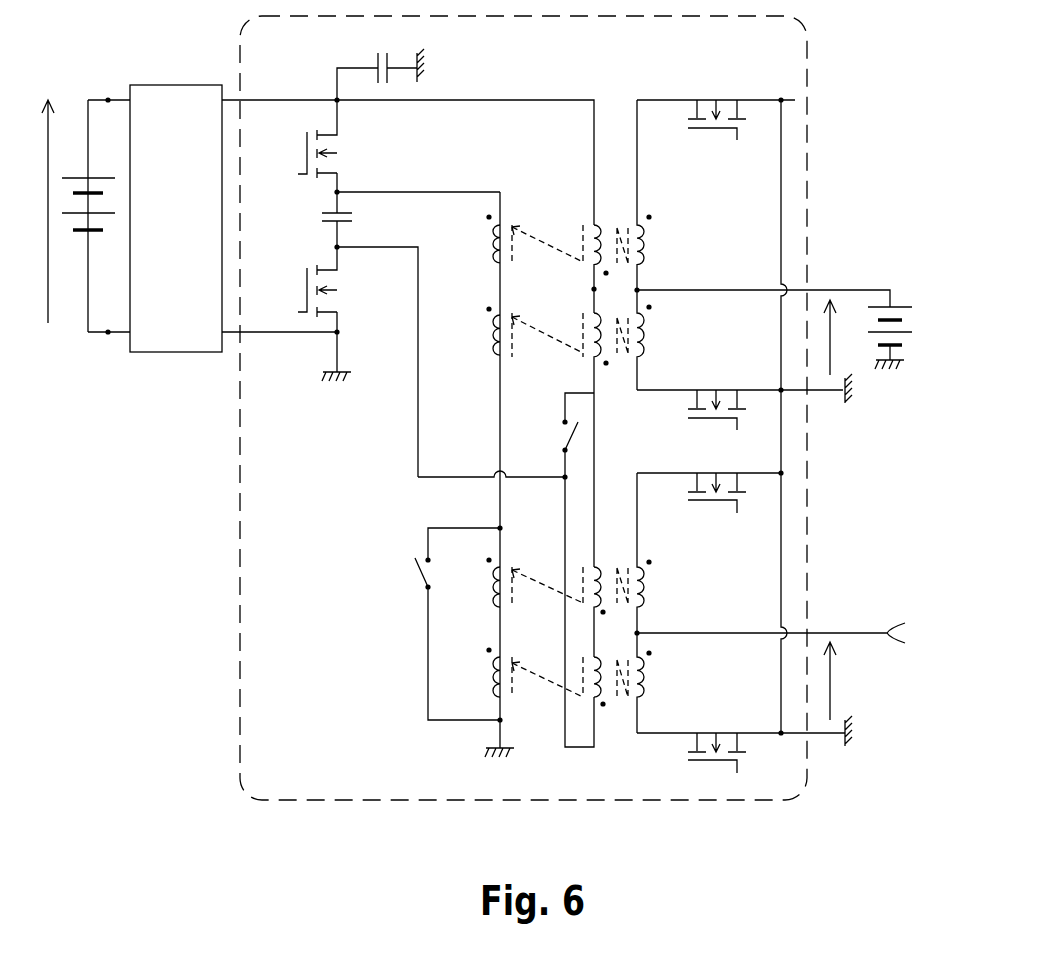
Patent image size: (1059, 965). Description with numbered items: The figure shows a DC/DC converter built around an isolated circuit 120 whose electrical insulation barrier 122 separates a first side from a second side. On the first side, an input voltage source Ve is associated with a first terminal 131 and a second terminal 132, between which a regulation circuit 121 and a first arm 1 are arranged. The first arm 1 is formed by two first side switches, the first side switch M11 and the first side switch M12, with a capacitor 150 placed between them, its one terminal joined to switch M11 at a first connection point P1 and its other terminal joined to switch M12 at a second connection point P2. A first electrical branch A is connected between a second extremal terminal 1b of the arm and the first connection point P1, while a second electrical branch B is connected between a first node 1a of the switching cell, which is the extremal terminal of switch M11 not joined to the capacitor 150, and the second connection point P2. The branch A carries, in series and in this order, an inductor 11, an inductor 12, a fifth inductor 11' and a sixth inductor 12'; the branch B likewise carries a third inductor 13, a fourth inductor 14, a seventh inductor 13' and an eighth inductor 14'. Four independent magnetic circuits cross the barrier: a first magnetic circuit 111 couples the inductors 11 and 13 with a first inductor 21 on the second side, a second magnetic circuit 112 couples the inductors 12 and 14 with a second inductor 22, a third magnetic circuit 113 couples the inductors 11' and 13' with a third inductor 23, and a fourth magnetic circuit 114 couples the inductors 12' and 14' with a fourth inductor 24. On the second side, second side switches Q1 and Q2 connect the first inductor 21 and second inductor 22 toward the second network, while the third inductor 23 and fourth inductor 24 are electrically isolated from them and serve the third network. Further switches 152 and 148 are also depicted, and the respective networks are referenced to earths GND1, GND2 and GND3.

The input voltage source Ve is at (64, 216).
The first terminal 131 is at (108, 98).
The second terminal 132 is at (108, 334).
The regulation circuit 121 is at (176, 218).
The first node of switching cell 1a is at (335, 99).
The second extremal terminal 1b is at (340, 333).
The first arm 1 is at (347, 177).
The first side switch M11 is at (325, 133).
The first side switch M12 is at (334, 282).
The first connection point P1 is at (336, 193).
The second connection point P2 is at (338, 248).
The capacitor 150 is at (353, 218).
The earth GND1 is at (420, 63).
The electrical branch A is at (455, 192).
The second electrical branch B is at (578, 99).
The electrical insulation barrier 122 is at (617, 110).
The isolated circuit 120 is at (781, 100).
The second side switch Q1 is at (708, 100).
The second side switch Q2 is at (722, 390).
The inductor 11 is at (466, 247).
The inductor 12 is at (466, 334).
The third inductor 13 is at (584, 239).
The fourth inductor 14 is at (565, 440).
The first magnetic circuit 111 is at (548, 245).
The second magnetic circuit 112 is at (563, 338).
The third magnetic circuit 113 is at (530, 580).
The fourth magnetic circuit 114 is at (545, 680).
The switch 152 is at (563, 428).
The switch 148 is at (418, 575).
The fifth inductor 11' is at (471, 573).
The sixth inductor 12' is at (467, 661).
The seventh inductor 13' is at (612, 583).
The eighth inductor 14' is at (589, 719).
The first inductor 21 is at (648, 245).
The second inductor 22 is at (648, 335).
The third inductor 23 is at (648, 590).
The fourth inductor 24 is at (648, 682).
The earth GND2 is at (850, 392).
The earth GND3 is at (850, 738).